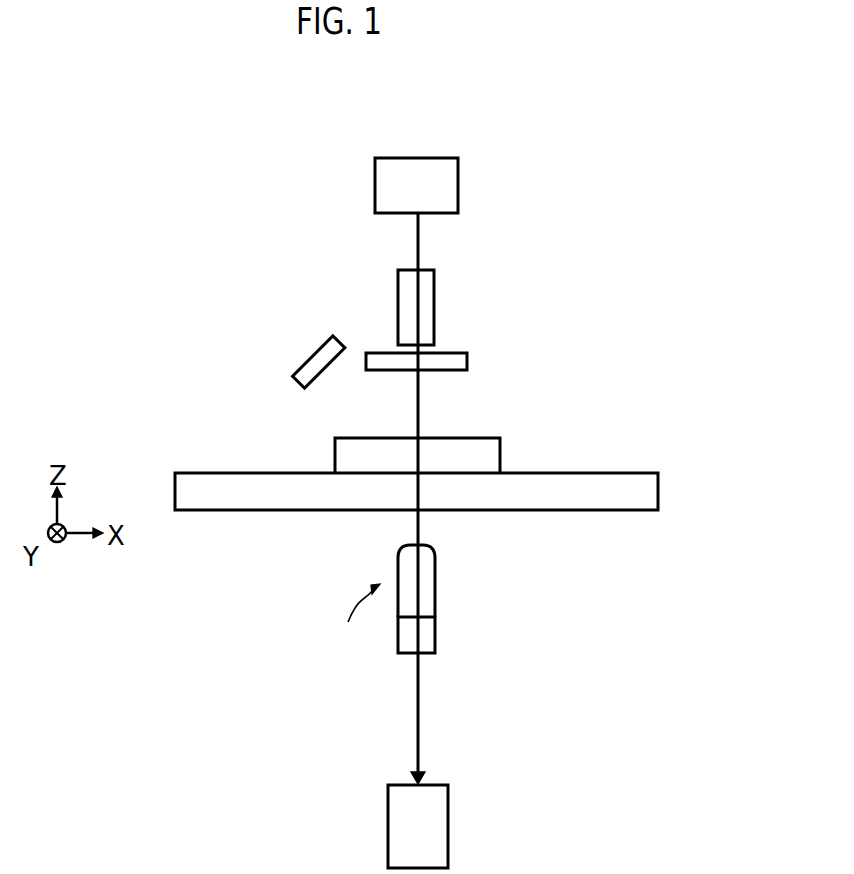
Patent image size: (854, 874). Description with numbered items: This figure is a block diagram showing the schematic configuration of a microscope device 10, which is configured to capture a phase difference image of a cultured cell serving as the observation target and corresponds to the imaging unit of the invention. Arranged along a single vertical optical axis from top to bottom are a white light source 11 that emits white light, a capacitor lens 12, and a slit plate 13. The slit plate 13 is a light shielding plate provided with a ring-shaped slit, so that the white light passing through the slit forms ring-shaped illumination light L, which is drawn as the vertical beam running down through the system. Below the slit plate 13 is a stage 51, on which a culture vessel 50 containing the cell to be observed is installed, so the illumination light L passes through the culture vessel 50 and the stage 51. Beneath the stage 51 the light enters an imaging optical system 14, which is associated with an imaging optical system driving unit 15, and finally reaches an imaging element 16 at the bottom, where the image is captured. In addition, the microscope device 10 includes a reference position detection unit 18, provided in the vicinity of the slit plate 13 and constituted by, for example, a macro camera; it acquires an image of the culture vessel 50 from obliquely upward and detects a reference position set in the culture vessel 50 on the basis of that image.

The microscope device 10 is at (176, 229).
The white light source 11 is at (460, 173).
The capacitor lens 12 is at (435, 283).
The slit plate 13 is at (468, 360).
The imaging optical system 14 is at (435, 600).
The imaging optical system driving unit 15 is at (435, 635).
The imaging element 16 is at (448, 812).
The reference position detection unit 18 is at (310, 355).
The culture vessel 50 is at (500, 447).
The stage 51 is at (658, 485).
The illumination light L is at (418, 400).